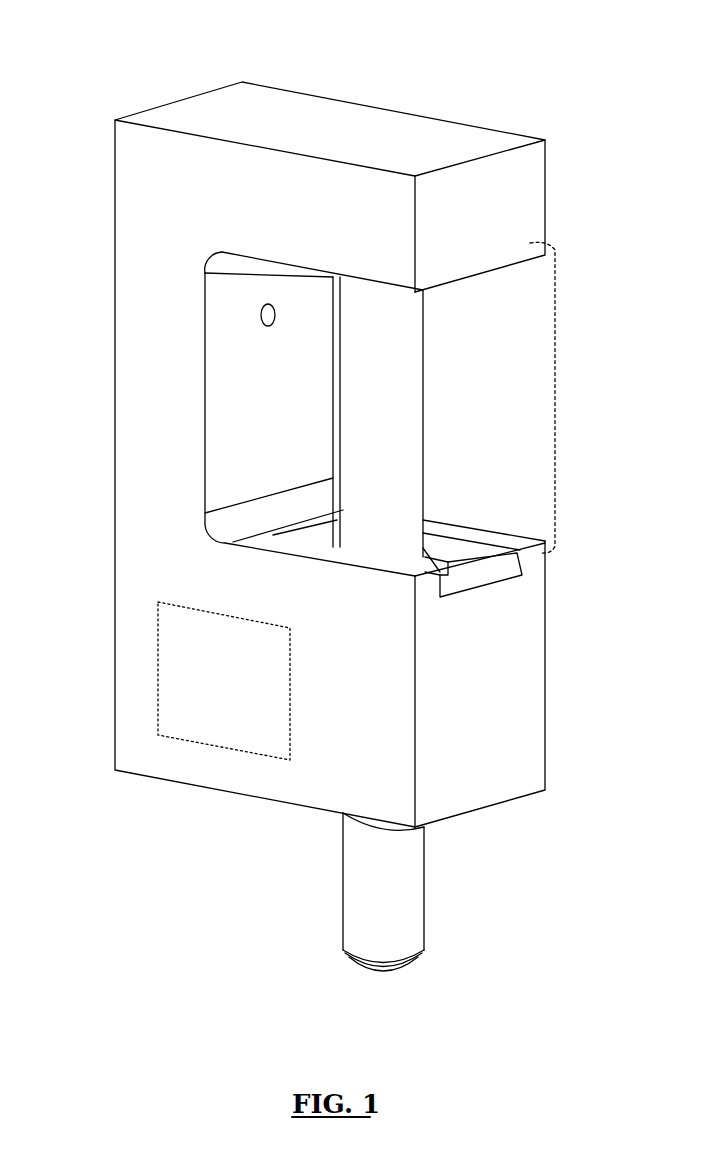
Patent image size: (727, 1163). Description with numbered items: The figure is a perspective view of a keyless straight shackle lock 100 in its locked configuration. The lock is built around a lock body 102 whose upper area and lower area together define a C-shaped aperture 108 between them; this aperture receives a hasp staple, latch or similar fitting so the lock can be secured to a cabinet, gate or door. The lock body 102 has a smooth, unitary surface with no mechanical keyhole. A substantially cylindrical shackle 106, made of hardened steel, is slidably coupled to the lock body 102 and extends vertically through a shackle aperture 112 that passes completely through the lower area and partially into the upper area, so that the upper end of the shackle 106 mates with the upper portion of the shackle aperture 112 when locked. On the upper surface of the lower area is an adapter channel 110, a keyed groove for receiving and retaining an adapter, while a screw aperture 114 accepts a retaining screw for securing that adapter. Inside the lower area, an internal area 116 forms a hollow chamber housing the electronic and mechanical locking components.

The keyless straight shackle lock 100 is at (65, 68).
The lock body 102 is at (443, 120).
The shackle 106 is at (405, 376).
The C-shaped aperture 108 is at (557, 398).
The adapter channel 110 is at (475, 562).
The shackle aperture 112 is at (432, 554).
The screw aperture 114 is at (257, 322).
The internal area 116 is at (197, 700).